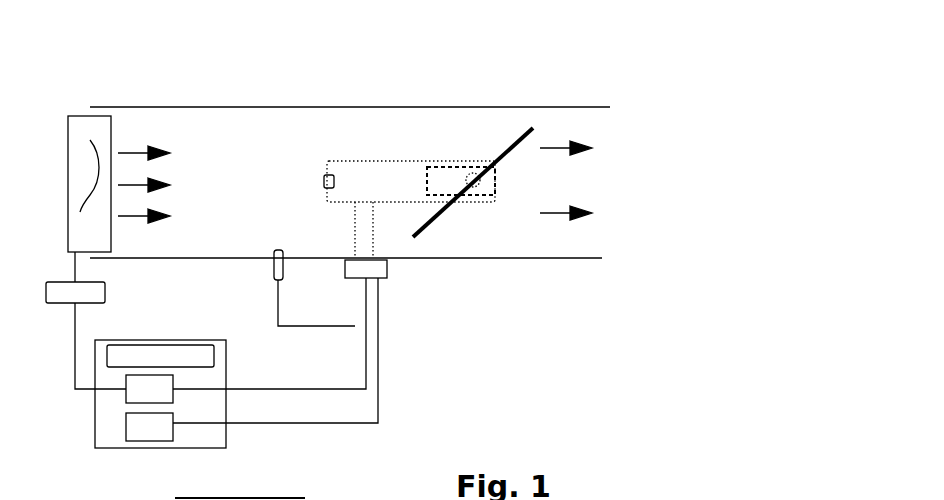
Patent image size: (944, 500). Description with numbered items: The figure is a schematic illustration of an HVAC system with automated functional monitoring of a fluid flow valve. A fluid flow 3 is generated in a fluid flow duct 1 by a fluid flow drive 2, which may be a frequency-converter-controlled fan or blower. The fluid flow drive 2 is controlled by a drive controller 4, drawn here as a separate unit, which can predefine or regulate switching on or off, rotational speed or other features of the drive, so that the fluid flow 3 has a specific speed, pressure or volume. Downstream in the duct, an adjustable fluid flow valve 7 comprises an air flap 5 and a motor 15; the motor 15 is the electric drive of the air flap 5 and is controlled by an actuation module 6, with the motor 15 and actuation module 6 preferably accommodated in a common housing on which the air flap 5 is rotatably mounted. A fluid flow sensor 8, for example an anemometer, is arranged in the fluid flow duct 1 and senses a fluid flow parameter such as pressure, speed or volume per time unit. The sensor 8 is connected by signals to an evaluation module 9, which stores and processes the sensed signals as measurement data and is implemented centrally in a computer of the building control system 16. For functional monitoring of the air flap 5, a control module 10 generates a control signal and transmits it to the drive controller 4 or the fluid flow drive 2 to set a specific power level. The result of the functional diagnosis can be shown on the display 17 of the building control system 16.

The fluid flow duct 1 is at (311, 106).
The fluid flow drive 2 is at (81, 131).
The fluid flow 3 is at (145, 141).
The drive controller 4 is at (53, 281).
The air flap 5 is at (532, 128).
The actuation module 6 is at (385, 280).
The fluid flow valve 7 is at (386, 160).
The fluid flow sensor 8 is at (272, 267).
The evaluation module 9 is at (145, 442).
The control module 10 is at (120, 397).
The motor 15 is at (430, 165).
The building control system 16 is at (93, 436).
The display 17 is at (107, 363).